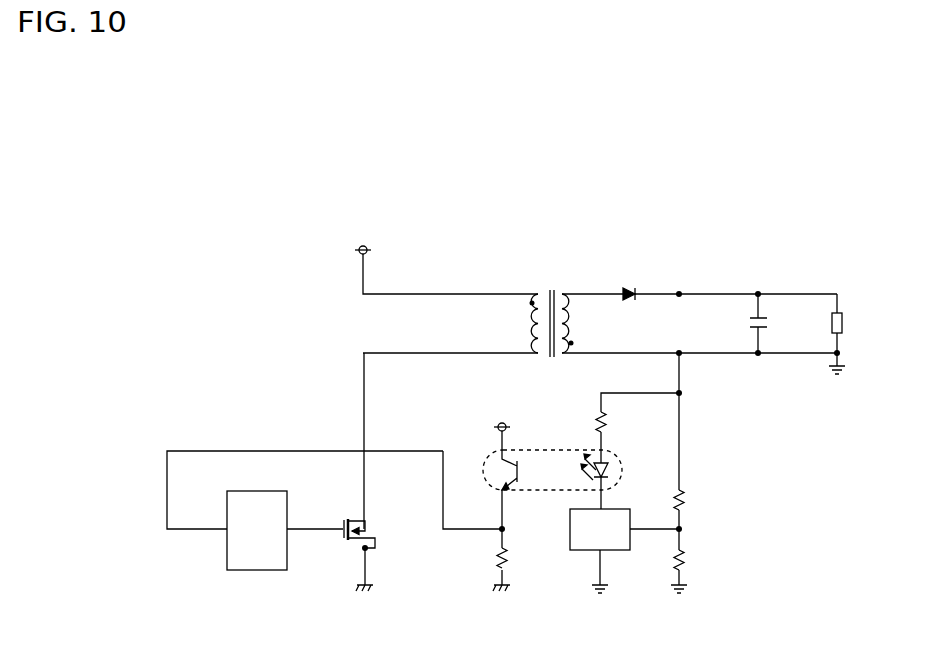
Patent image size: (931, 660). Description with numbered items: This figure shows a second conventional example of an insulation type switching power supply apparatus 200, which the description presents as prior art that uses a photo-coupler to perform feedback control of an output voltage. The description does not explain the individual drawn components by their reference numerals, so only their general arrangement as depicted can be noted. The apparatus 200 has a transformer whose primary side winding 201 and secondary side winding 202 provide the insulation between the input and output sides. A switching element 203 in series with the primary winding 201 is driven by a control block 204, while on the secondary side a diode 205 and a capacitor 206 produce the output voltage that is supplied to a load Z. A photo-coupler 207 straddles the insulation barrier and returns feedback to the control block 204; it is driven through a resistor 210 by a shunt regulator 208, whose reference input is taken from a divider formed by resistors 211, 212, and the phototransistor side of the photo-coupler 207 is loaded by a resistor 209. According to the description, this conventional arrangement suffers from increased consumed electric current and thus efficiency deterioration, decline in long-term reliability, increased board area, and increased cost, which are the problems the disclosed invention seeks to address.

The switching power supply 200 is at (177, 263).
The primary winding 201 is at (533, 325).
The secondary winding 202 is at (570, 325).
The switching transistor 203 is at (379, 533).
The control circuit 204 is at (258, 490).
The rectifier diode 205 is at (631, 287).
The smoothing capacitor 206 is at (769, 325).
The photocoupler 207 is at (554, 450).
The shunt regulator 208 is at (569, 533).
The resistor 209 is at (492, 563).
The resistor 210 is at (609, 426).
The resistor 211 is at (687, 503).
The resistor 212 is at (687, 563).
The load Z is at (844, 325).